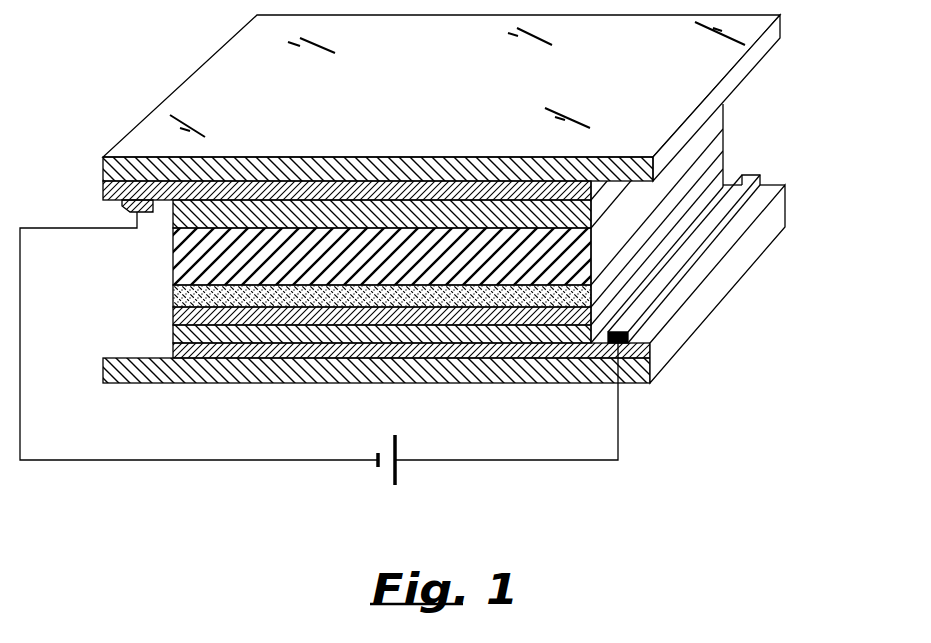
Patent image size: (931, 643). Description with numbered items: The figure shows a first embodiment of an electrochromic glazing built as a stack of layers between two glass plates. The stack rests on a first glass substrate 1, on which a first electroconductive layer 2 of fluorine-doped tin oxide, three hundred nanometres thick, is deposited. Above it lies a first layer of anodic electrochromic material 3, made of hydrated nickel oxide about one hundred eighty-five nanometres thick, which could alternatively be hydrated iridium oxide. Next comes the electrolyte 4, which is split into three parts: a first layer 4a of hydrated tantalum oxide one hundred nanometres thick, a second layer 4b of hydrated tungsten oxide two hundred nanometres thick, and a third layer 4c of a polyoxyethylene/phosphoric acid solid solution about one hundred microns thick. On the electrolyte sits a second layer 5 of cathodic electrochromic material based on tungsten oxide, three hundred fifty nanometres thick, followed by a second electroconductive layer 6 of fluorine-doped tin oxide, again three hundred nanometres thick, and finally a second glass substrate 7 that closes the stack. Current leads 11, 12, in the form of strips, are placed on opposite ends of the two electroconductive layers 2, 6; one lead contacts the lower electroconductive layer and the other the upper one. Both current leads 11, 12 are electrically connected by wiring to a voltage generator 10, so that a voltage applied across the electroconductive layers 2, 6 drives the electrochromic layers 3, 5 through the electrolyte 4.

The first glass substrate 1 is at (520, 370).
The first electroconductive layer 2 is at (350, 345).
The first layer of anodic electrochromic material 3 is at (235, 337).
The electrolyte 4 is at (330, 293).
The first layer of the electrolyte 4a is at (347, 308).
The second layer of the electrolyte 4b is at (103, 358).
The third layer of the electrolyte 4c is at (190, 250).
The second layer of cathodic electrochromic material 5 is at (450, 207).
The second electroconductive layer 6 is at (348, 190).
The second glass substrate 7 is at (250, 172).
The voltage generator 10 is at (388, 467).
The current lead 11 is at (673, 268).
The current lead 12 is at (122, 208).